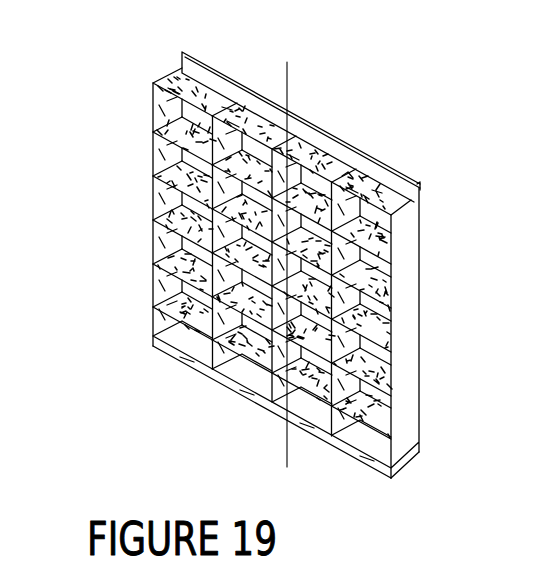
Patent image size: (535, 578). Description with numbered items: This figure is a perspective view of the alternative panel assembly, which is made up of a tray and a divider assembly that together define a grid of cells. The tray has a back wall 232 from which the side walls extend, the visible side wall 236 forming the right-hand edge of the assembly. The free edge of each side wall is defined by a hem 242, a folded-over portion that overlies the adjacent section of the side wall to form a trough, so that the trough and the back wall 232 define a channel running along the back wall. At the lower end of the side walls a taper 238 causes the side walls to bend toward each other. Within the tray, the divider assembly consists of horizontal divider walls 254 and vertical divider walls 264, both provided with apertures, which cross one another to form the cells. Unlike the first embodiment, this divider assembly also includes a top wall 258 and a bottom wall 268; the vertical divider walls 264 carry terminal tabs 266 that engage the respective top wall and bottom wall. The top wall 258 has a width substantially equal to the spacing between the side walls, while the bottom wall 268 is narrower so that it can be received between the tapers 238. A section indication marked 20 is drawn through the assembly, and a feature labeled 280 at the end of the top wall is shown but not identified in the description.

The section line 20- 20 is at (287, 62).
The back wall 232 is at (400, 226).
The side wall 236 is at (410, 326).
The taper 238 is at (153, 336).
The hem 242 is at (153, 244).
The horizontal divider wall 254 is at (148, 157).
The top wall 258 is at (150, 83).
The vertical divider wall 264 is at (230, 379).
The terminal tab 266 is at (347, 174).
The bottom wall 268 is at (370, 462).
The rail end 280 is at (422, 172).